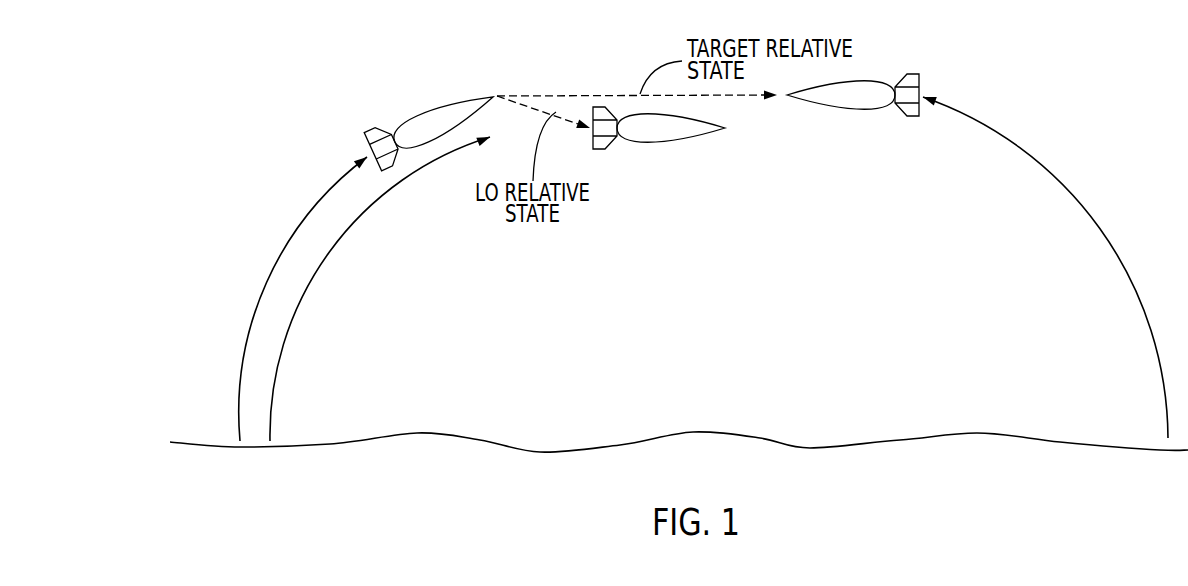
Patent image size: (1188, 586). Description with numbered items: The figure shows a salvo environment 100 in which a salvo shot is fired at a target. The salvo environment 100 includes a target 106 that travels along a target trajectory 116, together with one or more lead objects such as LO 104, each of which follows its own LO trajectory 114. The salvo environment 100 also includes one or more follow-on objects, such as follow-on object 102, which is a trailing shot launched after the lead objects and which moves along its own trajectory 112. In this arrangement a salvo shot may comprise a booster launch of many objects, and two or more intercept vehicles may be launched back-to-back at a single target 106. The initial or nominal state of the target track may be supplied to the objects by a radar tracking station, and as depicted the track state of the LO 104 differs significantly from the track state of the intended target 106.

The salvo environment 100 is at (364, 36).
The follow-on object 102 is at (420, 113).
The lead object (LO) 104 is at (658, 143).
The target 106 is at (853, 82).
The trajectory of follow-on object 112 is at (270, 278).
The LO trajectory 114 is at (330, 250).
The target trajectory 116 is at (1097, 232).